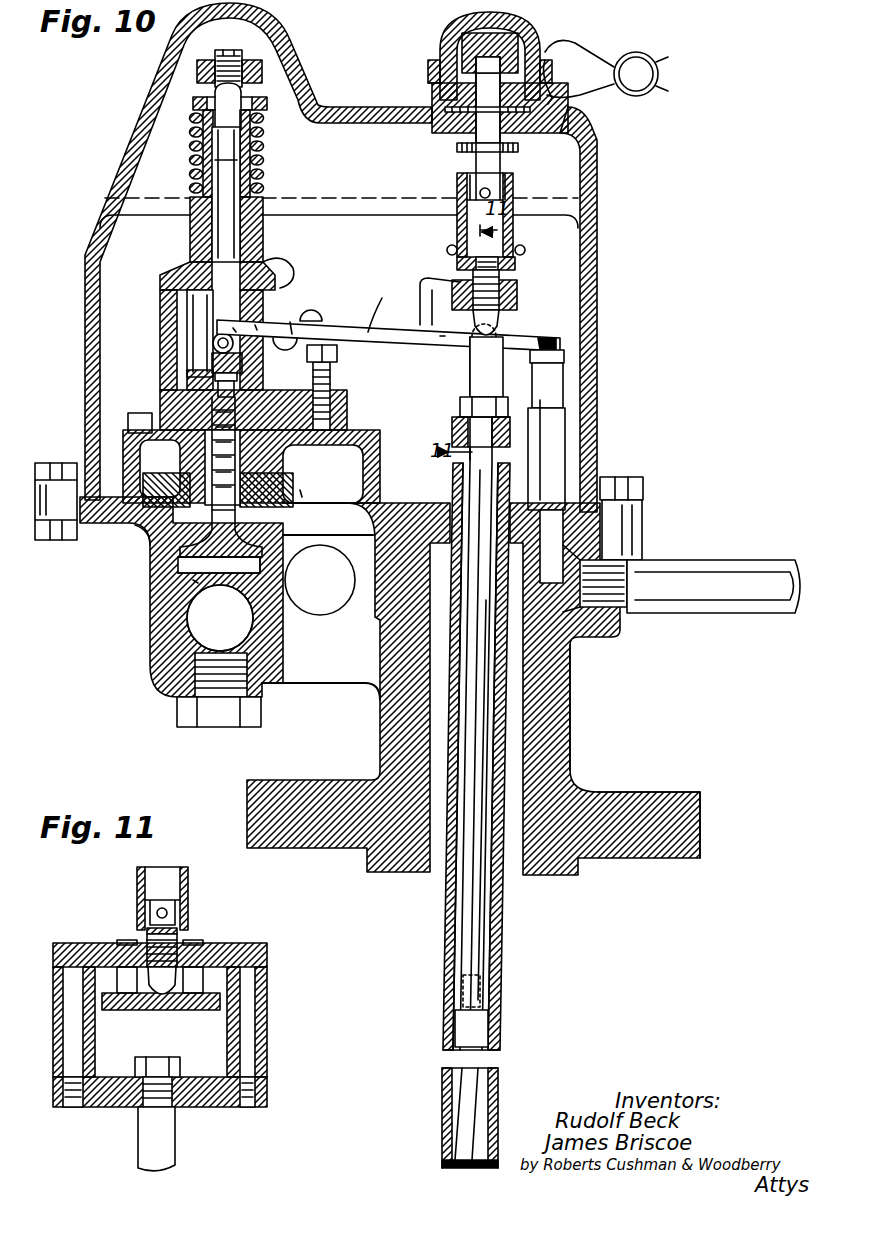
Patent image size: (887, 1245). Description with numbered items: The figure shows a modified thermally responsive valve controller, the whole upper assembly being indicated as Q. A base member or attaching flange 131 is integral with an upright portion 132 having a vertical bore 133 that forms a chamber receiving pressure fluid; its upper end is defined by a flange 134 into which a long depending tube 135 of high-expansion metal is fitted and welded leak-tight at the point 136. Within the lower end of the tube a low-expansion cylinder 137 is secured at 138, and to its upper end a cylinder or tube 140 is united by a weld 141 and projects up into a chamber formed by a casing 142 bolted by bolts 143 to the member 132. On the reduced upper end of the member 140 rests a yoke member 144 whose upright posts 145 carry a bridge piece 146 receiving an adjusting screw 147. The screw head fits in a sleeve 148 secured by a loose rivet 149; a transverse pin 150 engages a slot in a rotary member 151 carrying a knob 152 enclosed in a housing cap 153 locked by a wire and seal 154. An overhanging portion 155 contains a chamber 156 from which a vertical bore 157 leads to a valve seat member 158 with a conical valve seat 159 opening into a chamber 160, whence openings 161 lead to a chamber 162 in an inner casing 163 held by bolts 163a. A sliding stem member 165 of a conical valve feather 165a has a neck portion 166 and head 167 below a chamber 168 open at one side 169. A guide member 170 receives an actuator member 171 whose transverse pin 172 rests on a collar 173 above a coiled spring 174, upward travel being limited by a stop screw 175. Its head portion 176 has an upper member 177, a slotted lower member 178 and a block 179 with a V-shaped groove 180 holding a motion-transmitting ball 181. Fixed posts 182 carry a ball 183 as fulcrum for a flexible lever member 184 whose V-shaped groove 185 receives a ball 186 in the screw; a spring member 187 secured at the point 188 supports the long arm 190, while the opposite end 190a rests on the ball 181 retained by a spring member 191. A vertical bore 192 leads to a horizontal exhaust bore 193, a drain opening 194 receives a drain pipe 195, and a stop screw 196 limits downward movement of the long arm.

In FIG. 10, the cover Q is at (612, 185).
In FIG. 10, the base member or attaching flange 131 is at (600, 795).
In FIG. 10, the upright portion 132 is at (577, 690).
In FIG. 10, the vertical bore 133 is at (572, 740).
In FIG. 10, the flange 134 is at (540, 546).
In FIG. 10, the depending tube 135 is at (505, 920).
In FIG. 10, the weld point 136 is at (450, 480).
In FIG. 10, the cylinder 137 is at (487, 1063).
In FIG. 10, the weld 138 is at (442, 1165).
In FIG. 10, the cylinder or tube 140 is at (485, 785).
In FIG. 11, the cylinder or tube 140 is at (178, 1148).
In FIG. 10, the weld 141 is at (500, 1003).
In FIG. 10, the casing 142 is at (590, 407).
In FIG. 10, the bolts 143 is at (55, 463).
In FIG. 10, the yoke member 144 is at (460, 405).
In FIG. 11, the yoke member 144 is at (268, 1088).
In FIG. 10, the upright posts 145 is at (470, 370).
In FIG. 11, the upright posts 145 is at (268, 998).
In FIG. 10, the bridge piece 146 is at (518, 294).
In FIG. 11, the bridge piece 146 is at (268, 958).
In FIG. 10, the adjusting screw 147 is at (518, 270).
In FIG. 11, the adjusting screw 147 is at (180, 940).
In FIG. 10, the sleeve 148 is at (457, 235).
In FIG. 11, the sleeve 148 is at (190, 888).
In FIG. 10, the loose rivet 149 is at (526, 253).
In FIG. 11, the loose rivet 149 is at (168, 914).
In FIG. 10, the transverse pin 150 is at (492, 193).
In FIG. 10, the rotary member 151 is at (515, 152).
In FIG. 10, the knob 152 is at (470, 49).
In FIG. 10, the housing cap 153 is at (443, 30).
In FIG. 10, the wire and seal 154 is at (637, 52).
In FIG. 10, the overhanging portion 155 is at (158, 625).
In FIG. 10, the chamber 156 is at (197, 603).
In FIG. 10, the vertical bore 157 is at (195, 580).
In FIG. 10, the valve seat member 158 is at (150, 545).
In FIG. 10, the conical valve seat 159 is at (328, 523).
In FIG. 10, the chamber 160 is at (280, 476).
In FIG. 10, the openings 161 is at (170, 500).
In FIG. 10, the chamber 162 is at (460, 440).
In FIG. 10, the casing 163 is at (455, 418).
In FIG. 10, the bolts 163a is at (138, 413).
In FIG. 10, the sliding stem member 165 is at (225, 402).
In FIG. 10, the conical valve feather 165a is at (183, 565).
In FIG. 10, the neck portion 166 is at (200, 392).
In FIG. 10, the head 167 is at (238, 377).
In FIG. 10, the chamber 168 is at (178, 307).
In FIG. 10, the side opening 169 is at (292, 330).
In FIG. 10, the guide member 170 is at (193, 230).
In FIG. 10, the actuator member 171 is at (222, 170).
In FIG. 10, the transverse pin 172 is at (255, 97).
In FIG. 10, the collar 173 is at (196, 107).
In FIG. 10, the coiled spring 174 is at (190, 147).
In FIG. 10, the stop screw 175 is at (246, 50).
In FIG. 10, the head portion 176 is at (200, 330).
In FIG. 10, the upper member 177 is at (268, 268).
In FIG. 10, the lower member 178 is at (236, 389).
In FIG. 10, the block 179 is at (243, 360).
In FIG. 10, the V-shaped groove 180 is at (262, 334).
In FIG. 10, the motion-transmitting ball 181 is at (214, 345).
In FIG. 10, the fixed posts 182 is at (545, 460).
In FIG. 10, the ball 183 is at (560, 342).
In FIG. 10, the lever member 184 is at (520, 330).
In FIG. 10, the V-shaped groove 185 is at (440, 338).
In FIG. 10, the ball 186 is at (470, 340).
In FIG. 11, the ball 186 is at (165, 1003).
In FIG. 10, the spring member 187 is at (422, 278).
In FIG. 11, the spring member 187 is at (120, 942).
In FIG. 10, the point 188 is at (323, 316).
In FIG. 10, the long arm 190 is at (381, 300).
In FIG. 11, the long arm 190 is at (112, 1012).
In FIG. 10, the opposite end 190a is at (257, 325).
In FIG. 10, the spring member 191 is at (234, 333).
In FIG. 10, the vertical bore 192 is at (314, 484).
In FIG. 10, the horizontal bore 193 is at (322, 600).
In FIG. 10, the drain opening 194 is at (630, 546).
In FIG. 10, the drain pipe 195 is at (752, 565).
In FIG. 10, the stop screw 196 is at (333, 356).